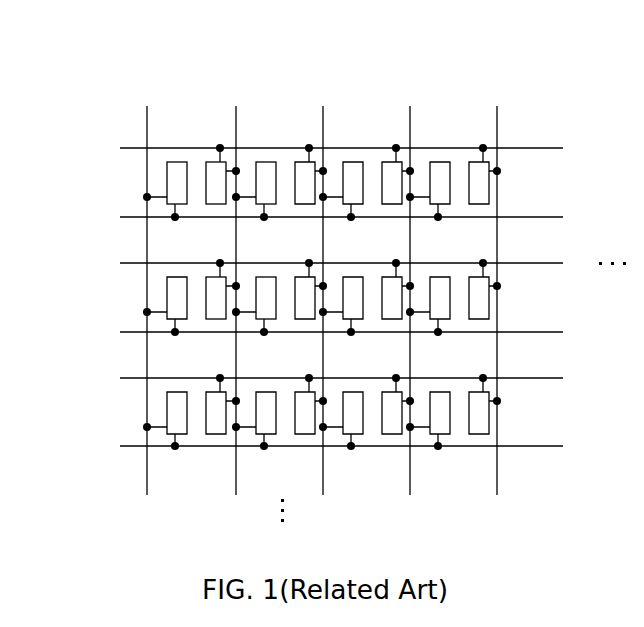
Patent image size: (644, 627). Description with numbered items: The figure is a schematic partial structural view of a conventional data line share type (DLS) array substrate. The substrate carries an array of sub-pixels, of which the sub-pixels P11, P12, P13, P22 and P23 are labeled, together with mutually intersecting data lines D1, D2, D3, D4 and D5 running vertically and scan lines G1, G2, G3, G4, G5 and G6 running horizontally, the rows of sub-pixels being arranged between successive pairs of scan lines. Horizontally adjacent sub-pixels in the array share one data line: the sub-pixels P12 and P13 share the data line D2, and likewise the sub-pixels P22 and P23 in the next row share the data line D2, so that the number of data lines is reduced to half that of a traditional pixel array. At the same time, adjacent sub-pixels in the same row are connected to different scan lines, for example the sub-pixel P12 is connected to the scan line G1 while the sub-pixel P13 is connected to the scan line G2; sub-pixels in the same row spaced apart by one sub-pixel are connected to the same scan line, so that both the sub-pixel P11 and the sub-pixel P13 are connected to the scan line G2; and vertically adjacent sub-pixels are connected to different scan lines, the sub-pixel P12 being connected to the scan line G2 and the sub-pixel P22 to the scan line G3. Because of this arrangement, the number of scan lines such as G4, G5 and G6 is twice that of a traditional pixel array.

The sub-pixel P11 is at (176, 168).
The sub-pixel P12 is at (211, 168).
The sub-pixel P13 is at (265, 170).
The sub-pixel P22 is at (212, 295).
The sub-pixel P23 is at (265, 305).
The data line D1 is at (144, 283).
The data line D2 is at (240, 283).
The data line D3 is at (320, 283).
The data line D4 is at (410, 283).
The data line D5 is at (497, 283).
The scan line G1 is at (323, 148).
The scan line G2 is at (323, 217).
The scan line G3 is at (323, 263).
The scan line G4 is at (323, 332).
The scan line G5 is at (323, 378).
The scan line G6 is at (323, 446).